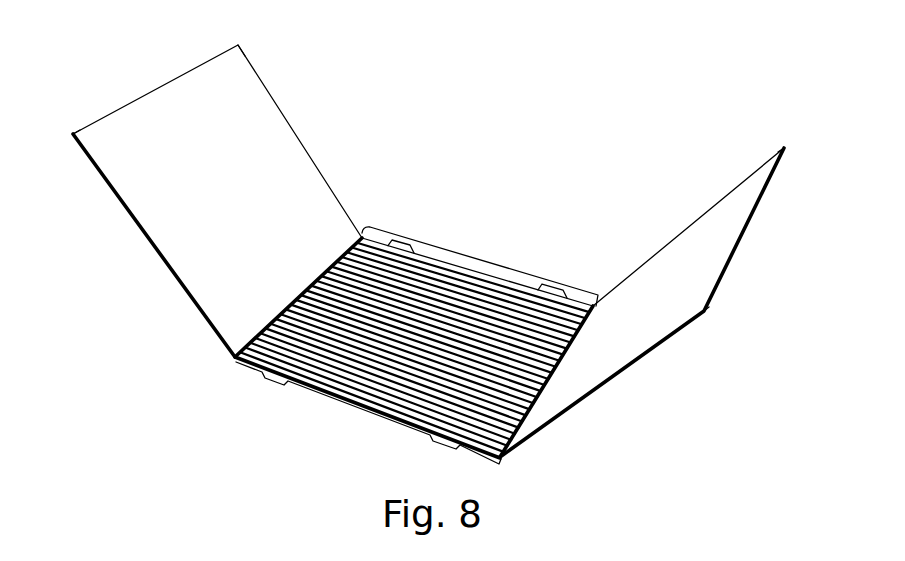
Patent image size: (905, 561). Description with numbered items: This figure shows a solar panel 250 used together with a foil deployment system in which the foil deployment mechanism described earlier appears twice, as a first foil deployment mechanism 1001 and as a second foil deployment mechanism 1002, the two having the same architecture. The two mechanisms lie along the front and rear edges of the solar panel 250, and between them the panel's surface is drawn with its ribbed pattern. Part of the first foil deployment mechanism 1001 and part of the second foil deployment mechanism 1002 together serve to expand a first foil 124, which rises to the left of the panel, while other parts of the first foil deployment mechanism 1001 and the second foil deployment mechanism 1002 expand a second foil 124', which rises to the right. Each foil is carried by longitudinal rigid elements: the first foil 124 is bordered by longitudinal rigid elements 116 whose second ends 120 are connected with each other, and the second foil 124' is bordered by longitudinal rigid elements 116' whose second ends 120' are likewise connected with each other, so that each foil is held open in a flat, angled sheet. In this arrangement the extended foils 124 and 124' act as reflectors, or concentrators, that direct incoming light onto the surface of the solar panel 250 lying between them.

The longitudinal rigid element 116 is at (231, 156).
The second end 120 is at (199, 74).
The first foil 124 is at (154, 245).
The longitudinal rigid element 116' is at (667, 316).
The second end 120' is at (750, 223).
The second foil 124' is at (642, 302).
The solar panel 250 is at (343, 298).
The first foil deployment mechanism 1001 is at (497, 474).
The second foil deployment mechanism 1002 is at (595, 298).